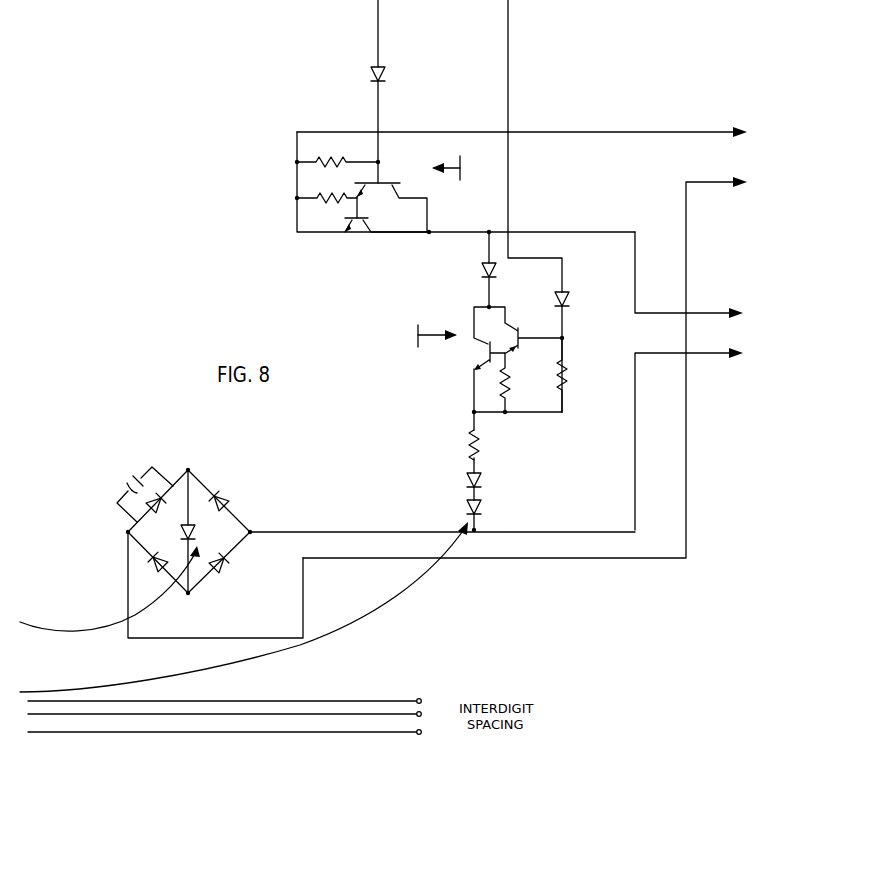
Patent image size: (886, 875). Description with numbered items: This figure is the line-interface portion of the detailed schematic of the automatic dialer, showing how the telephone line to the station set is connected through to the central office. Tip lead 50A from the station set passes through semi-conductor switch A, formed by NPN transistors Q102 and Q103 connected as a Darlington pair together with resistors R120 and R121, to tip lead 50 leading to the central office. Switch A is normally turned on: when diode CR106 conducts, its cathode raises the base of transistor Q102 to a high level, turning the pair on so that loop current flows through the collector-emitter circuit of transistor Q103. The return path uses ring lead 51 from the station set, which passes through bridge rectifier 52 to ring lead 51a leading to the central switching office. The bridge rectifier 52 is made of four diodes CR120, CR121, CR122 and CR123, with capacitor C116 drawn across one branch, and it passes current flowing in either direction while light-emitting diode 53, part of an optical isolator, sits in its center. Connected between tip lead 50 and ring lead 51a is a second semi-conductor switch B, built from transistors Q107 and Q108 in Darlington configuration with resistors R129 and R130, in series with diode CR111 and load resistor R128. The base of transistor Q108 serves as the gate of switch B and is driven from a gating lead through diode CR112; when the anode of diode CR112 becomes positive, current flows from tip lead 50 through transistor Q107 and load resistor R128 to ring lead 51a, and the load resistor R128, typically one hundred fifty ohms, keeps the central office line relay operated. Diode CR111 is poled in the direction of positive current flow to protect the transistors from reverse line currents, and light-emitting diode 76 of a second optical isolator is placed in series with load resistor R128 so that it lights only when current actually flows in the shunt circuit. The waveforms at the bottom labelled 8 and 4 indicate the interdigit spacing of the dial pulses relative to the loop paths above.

The tip lead of the station set 50A is at (714, 133).
The ring lead 51 is at (720, 186).
The tip lead 50 is at (713, 311).
The ring lead 51a is at (718, 357).
The bridge rectifier 52 is at (265, 509).
The light-emitting diode 53 is at (200, 531).
The light-emitting diode 76 is at (481, 507).
The interdigit spacing pulse 8 is at (426, 705).
The interdigit spacing pulse 4 is at (426, 718).
The semi-conductor switch A is at (454, 168).
The semi-conductor switch B is at (429, 336).
The diode CR106 is at (386, 76).
The resistor R120 is at (337, 149).
The resistor R121 is at (327, 185).
The transistor Q102 is at (393, 191).
The transistor Q103 is at (356, 224).
The diode CR111 is at (480, 269).
The diode CR112 is at (570, 301).
The transistor Q107 is at (483, 349).
The transistor Q108 is at (530, 320).
The load resistor R128 is at (480, 449).
The resistor R129 is at (530, 382).
The resistor R130 is at (586, 375).
The diode CR120 is at (164, 517).
The diode CR121 is at (158, 575).
The diode CR122 is at (240, 492).
The diode CR123 is at (242, 573).
The capacitor C116 is at (132, 478).